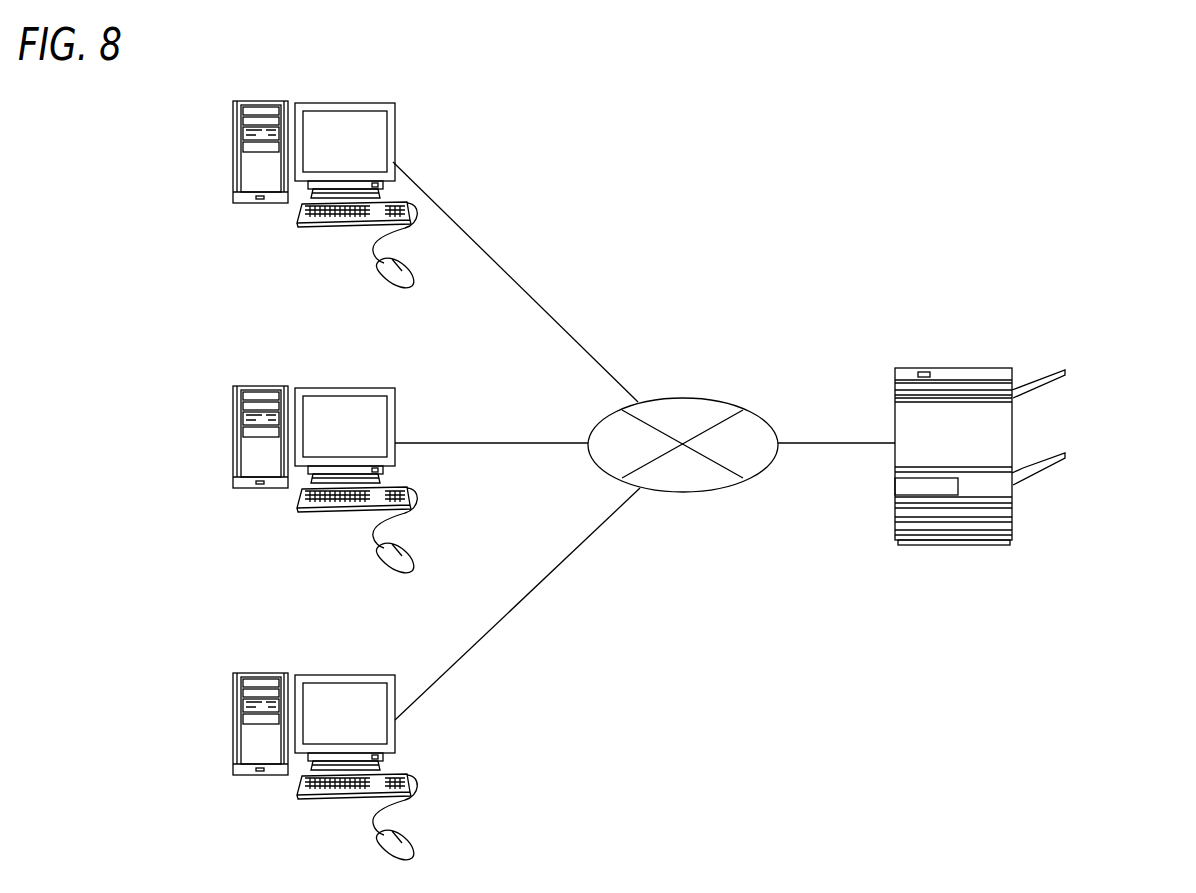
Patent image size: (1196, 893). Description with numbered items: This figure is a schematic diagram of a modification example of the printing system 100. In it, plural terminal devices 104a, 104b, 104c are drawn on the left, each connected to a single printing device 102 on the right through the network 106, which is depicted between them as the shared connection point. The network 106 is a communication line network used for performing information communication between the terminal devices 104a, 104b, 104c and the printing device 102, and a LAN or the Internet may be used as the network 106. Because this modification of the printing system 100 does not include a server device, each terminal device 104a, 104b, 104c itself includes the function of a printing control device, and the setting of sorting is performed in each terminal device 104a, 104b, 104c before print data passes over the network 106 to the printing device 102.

The printing system 100 is at (840, 102).
The printing device 102 is at (953, 368).
The terminal device 104a is at (305, 100).
The terminal device 104b is at (305, 388).
The terminal device 104c is at (305, 675).
The network 106 is at (692, 398).